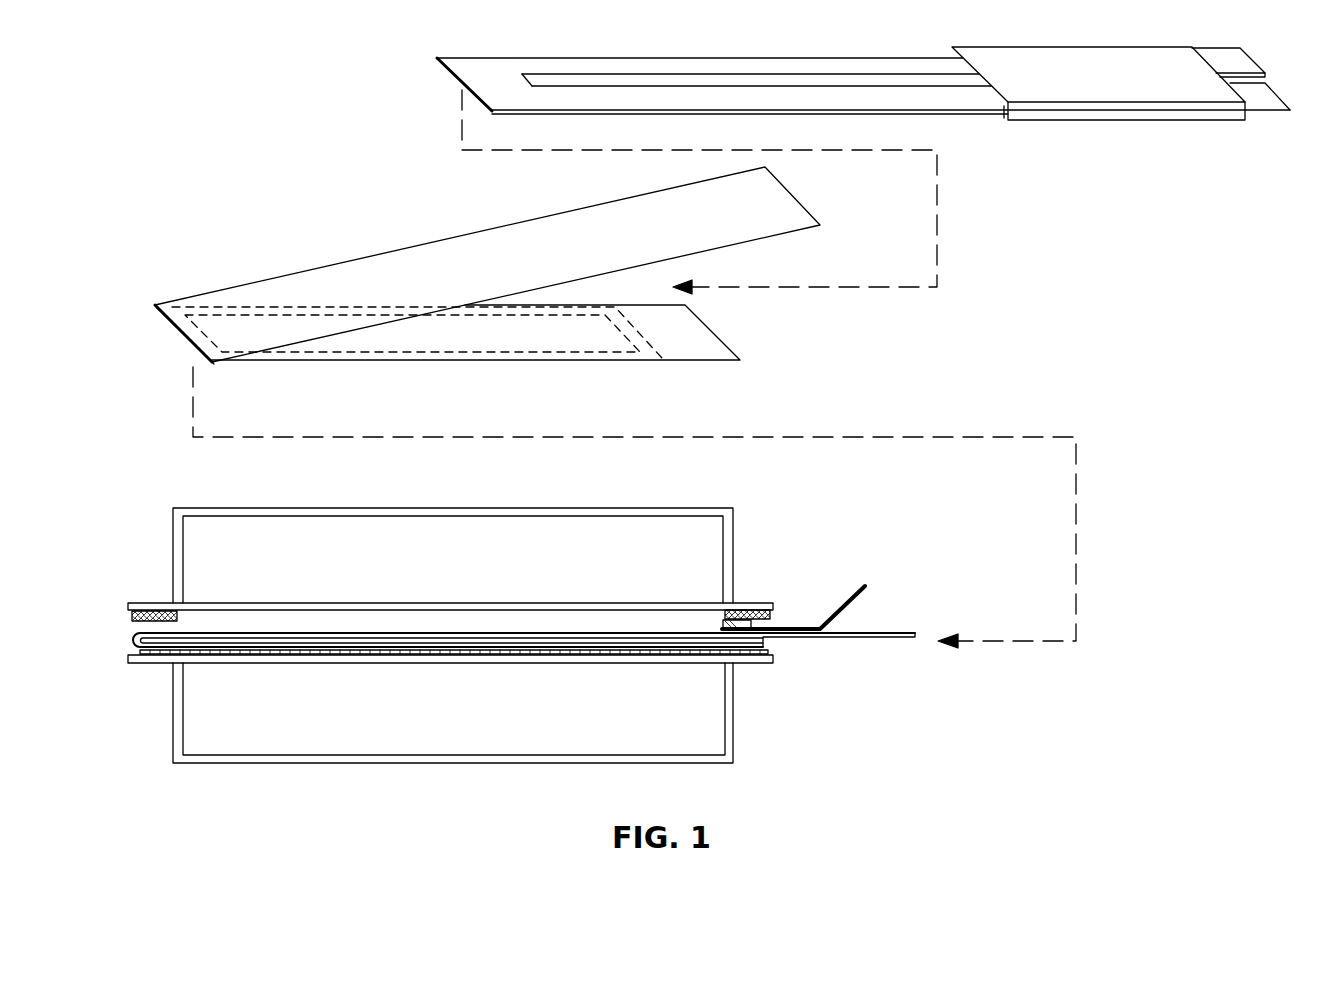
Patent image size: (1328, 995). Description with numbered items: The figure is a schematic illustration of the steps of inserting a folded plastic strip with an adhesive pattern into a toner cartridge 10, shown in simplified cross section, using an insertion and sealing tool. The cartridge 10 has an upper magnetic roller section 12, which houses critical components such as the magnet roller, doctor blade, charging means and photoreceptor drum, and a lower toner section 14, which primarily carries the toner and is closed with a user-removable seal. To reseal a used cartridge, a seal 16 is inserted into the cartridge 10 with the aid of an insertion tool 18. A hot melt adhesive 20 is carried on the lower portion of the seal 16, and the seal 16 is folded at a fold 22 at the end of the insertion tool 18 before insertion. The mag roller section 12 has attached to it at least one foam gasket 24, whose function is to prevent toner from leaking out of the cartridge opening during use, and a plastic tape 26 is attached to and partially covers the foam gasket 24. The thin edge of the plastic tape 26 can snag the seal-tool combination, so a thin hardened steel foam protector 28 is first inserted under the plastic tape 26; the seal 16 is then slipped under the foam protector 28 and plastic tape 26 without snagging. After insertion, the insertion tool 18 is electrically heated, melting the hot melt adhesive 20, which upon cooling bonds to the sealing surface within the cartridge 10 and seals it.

The toner cartridge 10 is at (165, 565).
The magnetic roller section 12 is at (285, 510).
The toner section 14 is at (332, 755).
The seal 16 is at (322, 260).
The insertion tool 18 is at (598, 50).
The hot melt adhesive 20 is at (483, 372).
The fold 22 is at (188, 340).
The foam gasket 24 is at (770, 614).
The plastic tape 26 is at (752, 623).
The foam protector 28 is at (835, 615).